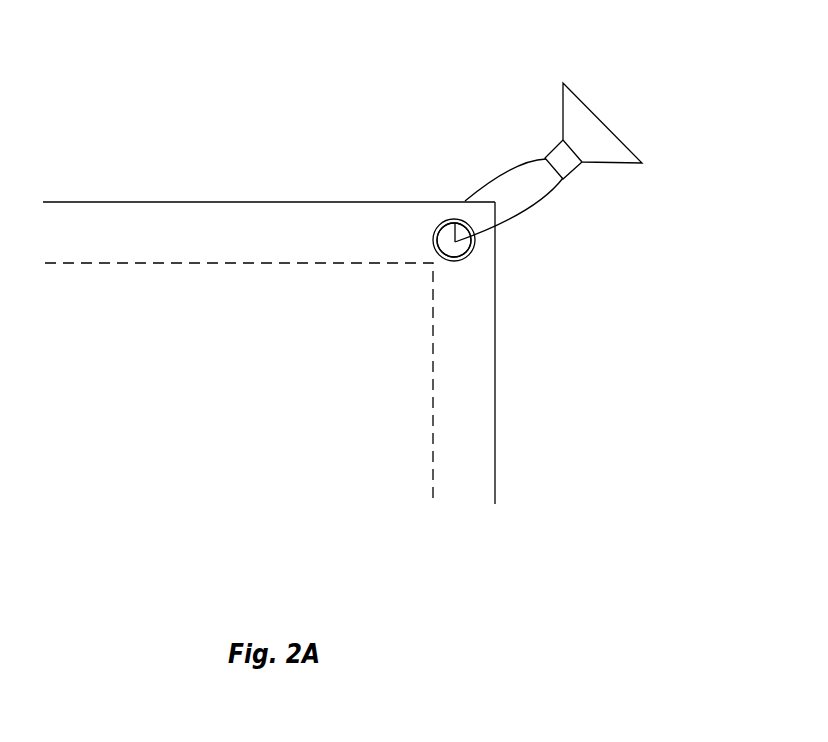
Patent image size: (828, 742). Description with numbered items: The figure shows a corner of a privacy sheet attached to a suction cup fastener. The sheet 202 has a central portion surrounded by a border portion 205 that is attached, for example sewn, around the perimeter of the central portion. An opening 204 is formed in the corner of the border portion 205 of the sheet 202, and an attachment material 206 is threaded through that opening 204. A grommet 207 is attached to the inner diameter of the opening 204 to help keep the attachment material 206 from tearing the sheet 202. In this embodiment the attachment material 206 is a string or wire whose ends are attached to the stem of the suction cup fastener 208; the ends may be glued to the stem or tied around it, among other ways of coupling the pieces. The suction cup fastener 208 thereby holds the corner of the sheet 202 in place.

The sheet 202 is at (333, 191).
The opening 204 is at (467, 253).
The border portion 205 is at (472, 420).
The attachment material 206 is at (543, 197).
The grommet 207 is at (464, 262).
The suction cup fastener 208 is at (595, 132).